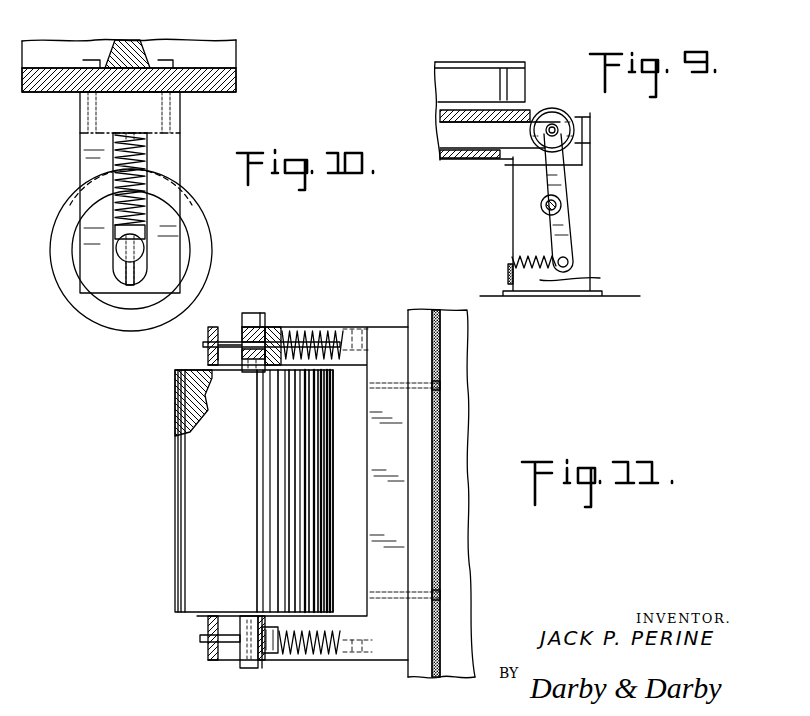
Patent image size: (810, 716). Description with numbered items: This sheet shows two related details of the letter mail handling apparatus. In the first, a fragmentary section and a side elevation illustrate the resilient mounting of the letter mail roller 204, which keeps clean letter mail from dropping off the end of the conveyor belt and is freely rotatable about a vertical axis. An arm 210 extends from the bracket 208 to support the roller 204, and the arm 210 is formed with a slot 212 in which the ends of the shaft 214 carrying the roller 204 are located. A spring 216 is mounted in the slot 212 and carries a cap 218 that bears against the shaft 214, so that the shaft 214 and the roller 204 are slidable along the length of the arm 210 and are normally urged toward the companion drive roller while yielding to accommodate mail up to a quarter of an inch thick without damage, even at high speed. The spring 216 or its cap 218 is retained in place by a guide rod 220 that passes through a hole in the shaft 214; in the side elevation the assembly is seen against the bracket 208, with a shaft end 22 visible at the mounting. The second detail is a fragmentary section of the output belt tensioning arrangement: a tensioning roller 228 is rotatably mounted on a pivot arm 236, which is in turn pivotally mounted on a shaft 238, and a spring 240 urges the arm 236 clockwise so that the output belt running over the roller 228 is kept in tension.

In FIG. 11, the shaft 22 is at (229, 342).
In FIG. 10, the letter mail roller 204 is at (200, 262).
In FIG. 11, the letter mail roller 204 is at (190, 508).
In FIG. 10, the bracket 208 is at (231, 50).
In FIG. 11, the bracket 208 is at (415, 322).
In FIG. 10, the arm 210 is at (170, 150).
In FIG. 10, the slot 212 is at (143, 208).
In FIG. 11, the shaft 214 is at (252, 320).
In FIG. 10, the spring 216 is at (115, 159).
In FIG. 11, the spring 216 is at (312, 333).
In FIG. 10, the spring cap 218 is at (140, 234).
In FIG. 11, the spring cap 218 is at (270, 336).
In FIG. 11, the guide rod 220 is at (203, 344).
In FIG. 9, the tensioning roller 228 is at (567, 130).
In FIG. 9, the pivot arm 236 is at (558, 172).
In FIG. 9, the shaft 238 is at (563, 205).
In FIG. 9, the spring 240 is at (600, 278).